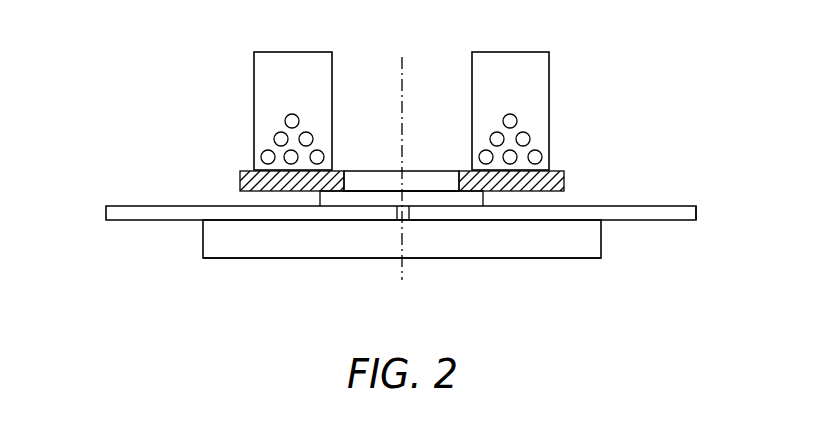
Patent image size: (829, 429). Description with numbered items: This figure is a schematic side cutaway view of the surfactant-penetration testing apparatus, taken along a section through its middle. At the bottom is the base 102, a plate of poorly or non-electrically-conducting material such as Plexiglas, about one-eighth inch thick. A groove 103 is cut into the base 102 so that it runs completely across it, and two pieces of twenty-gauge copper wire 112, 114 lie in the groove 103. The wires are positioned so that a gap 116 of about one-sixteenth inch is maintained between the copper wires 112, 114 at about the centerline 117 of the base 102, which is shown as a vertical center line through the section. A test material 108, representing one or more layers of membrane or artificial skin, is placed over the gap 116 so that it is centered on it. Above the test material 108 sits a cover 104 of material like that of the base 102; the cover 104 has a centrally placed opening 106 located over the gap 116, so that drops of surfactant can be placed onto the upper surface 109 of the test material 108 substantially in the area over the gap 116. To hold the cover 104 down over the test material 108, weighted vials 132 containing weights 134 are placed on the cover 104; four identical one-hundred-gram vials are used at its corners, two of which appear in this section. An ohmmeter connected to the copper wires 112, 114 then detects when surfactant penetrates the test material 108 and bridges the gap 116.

The base 102 is at (520, 250).
The groove 103 is at (297, 220).
The cover 104 is at (240, 177).
The centrally placed opening 106 is at (375, 171).
The test material 108 is at (452, 198).
The upper surface 109 is at (418, 186).
The copper wire 112 is at (120, 205).
The copper wire 114 is at (683, 205).
The gap 116 is at (397, 219).
The centerline 117 is at (400, 57).
The weighted vial 132 is at (254, 75).
The weights 134 is at (276, 138).